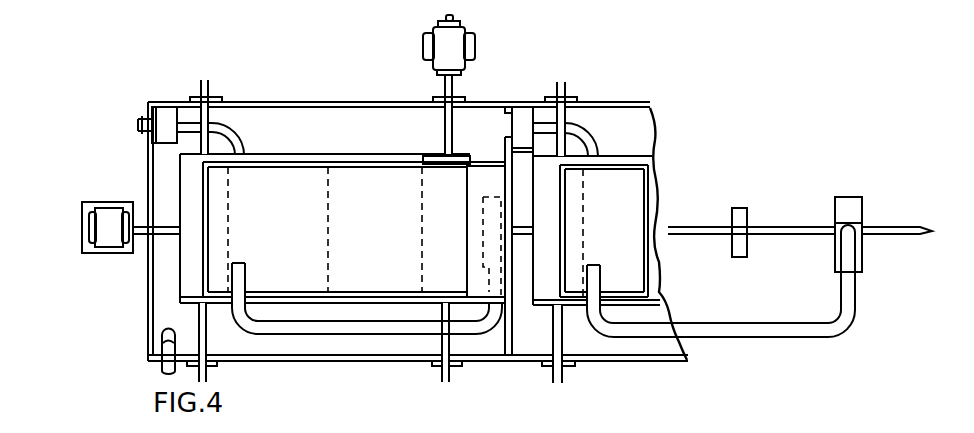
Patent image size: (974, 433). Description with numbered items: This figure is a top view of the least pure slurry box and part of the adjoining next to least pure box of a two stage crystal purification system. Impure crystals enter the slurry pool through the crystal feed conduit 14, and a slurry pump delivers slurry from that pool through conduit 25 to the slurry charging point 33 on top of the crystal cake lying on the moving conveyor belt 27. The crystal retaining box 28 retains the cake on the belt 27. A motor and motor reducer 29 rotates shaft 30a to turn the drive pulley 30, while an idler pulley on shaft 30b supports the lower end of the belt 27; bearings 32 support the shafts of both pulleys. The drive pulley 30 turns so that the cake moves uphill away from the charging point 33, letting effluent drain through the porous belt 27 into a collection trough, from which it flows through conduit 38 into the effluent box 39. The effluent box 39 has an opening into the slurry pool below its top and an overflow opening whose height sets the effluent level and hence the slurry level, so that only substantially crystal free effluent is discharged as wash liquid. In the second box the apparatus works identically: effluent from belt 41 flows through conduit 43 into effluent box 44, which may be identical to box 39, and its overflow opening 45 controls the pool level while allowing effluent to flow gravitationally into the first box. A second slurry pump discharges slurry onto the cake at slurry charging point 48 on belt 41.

The crystal feed conduit 14 is at (161, 364).
The conduit 25 is at (266, 326).
The moving conveyor belt 27 is at (322, 153).
The crystal retaining box 28 is at (279, 296).
The motor and motor reducer 29 is at (477, 53).
The drive pulley 30 is at (438, 154).
The shaft 30a is at (457, 93).
The shaft 30b is at (210, 92).
The bearings 32 is at (223, 100).
The slurry charging point 33 is at (239, 267).
The conduit 38 is at (295, 108).
The effluent box 39 is at (163, 114).
The belt 41 is at (658, 208).
The conduit 43 is at (600, 144).
The effluent box 44 is at (518, 124).
The overflow opening 45 is at (510, 127).
The slurry charging point 48 is at (592, 266).